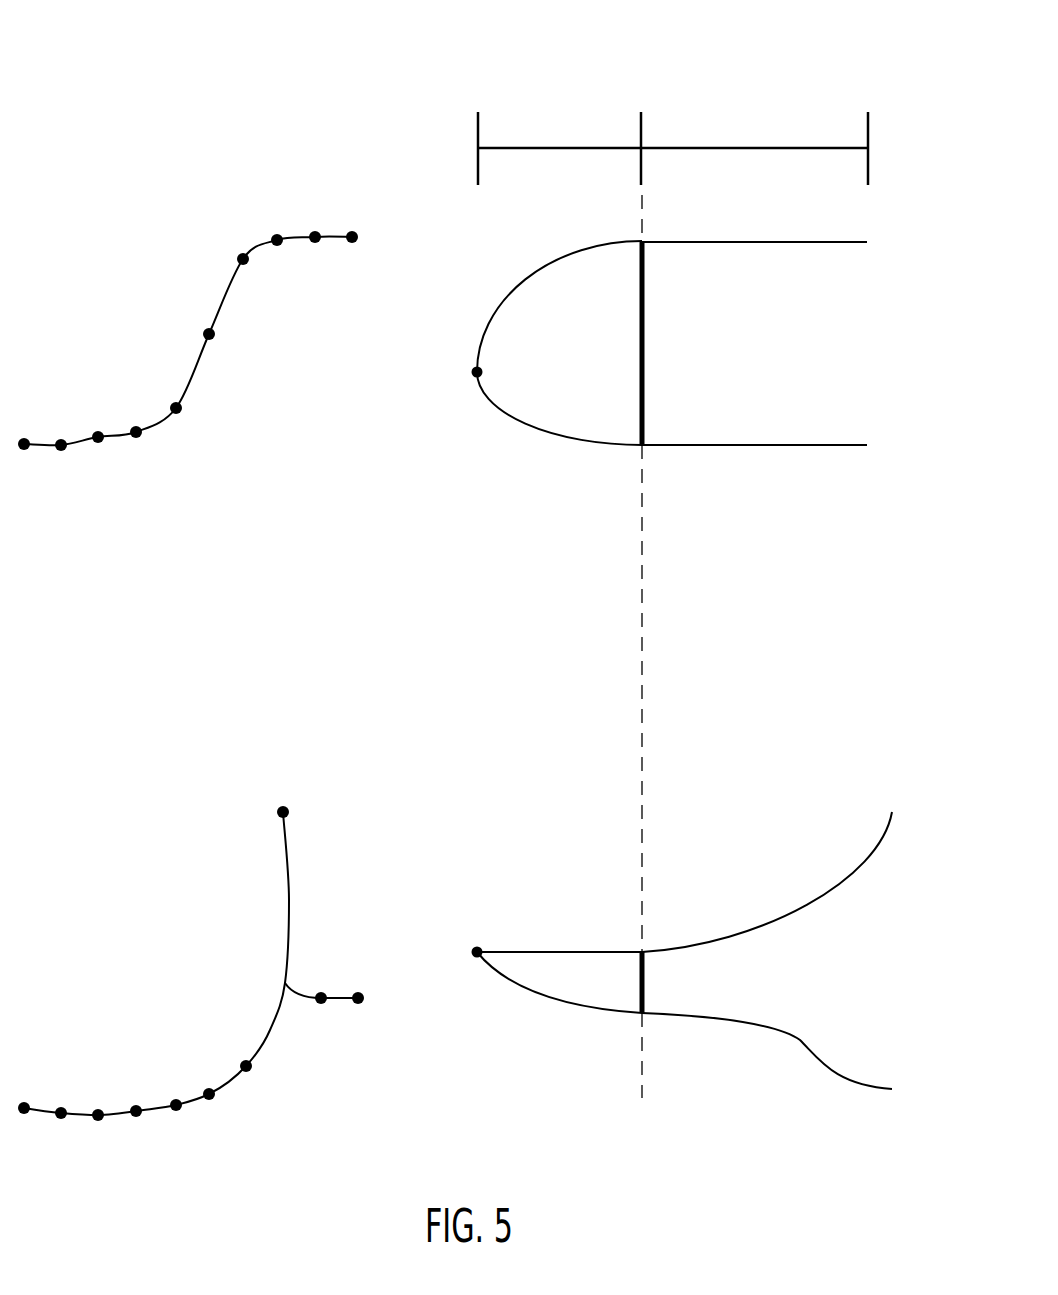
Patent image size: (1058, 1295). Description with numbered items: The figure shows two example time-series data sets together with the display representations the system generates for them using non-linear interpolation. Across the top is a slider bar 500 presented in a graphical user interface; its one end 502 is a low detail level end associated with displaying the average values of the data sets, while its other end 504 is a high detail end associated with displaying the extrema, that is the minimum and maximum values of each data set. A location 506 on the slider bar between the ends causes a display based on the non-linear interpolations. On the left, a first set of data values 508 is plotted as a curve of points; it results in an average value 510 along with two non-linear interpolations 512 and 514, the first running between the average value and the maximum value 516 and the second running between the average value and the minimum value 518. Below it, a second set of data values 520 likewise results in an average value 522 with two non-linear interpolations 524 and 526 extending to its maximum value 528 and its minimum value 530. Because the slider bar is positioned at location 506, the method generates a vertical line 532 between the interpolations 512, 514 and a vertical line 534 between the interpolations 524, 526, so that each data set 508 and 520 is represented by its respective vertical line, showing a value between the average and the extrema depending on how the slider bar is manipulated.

The slider bar 500 is at (456, 149).
The one end of the slider bar 502 is at (478, 186).
The other end of the slider bar 504 is at (869, 127).
The location on the slider bar 506 is at (641, 130).
The first set of data values 508 is at (150, 335).
The average value 510 is at (447, 388).
The non-linear interpolation 512 is at (503, 298).
The non-linear interpolation 514 is at (533, 425).
The maximum value 516 is at (781, 251).
The minimum value 518 is at (780, 454).
The second set of data values 520 is at (130, 1017).
The average value 522 is at (451, 969).
The non-linear interpolation 524 is at (589, 952).
The non-linear interpolation 526 is at (533, 997).
The maximum value 528 is at (777, 844).
The minimum value 530 is at (774, 1081).
The vertical line 532 is at (645, 410).
The vertical line 534 is at (643, 990).